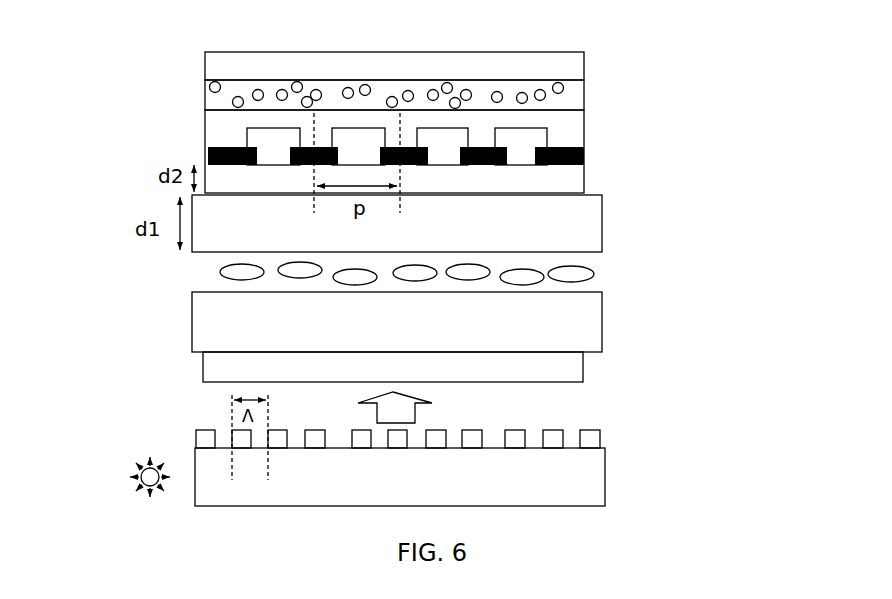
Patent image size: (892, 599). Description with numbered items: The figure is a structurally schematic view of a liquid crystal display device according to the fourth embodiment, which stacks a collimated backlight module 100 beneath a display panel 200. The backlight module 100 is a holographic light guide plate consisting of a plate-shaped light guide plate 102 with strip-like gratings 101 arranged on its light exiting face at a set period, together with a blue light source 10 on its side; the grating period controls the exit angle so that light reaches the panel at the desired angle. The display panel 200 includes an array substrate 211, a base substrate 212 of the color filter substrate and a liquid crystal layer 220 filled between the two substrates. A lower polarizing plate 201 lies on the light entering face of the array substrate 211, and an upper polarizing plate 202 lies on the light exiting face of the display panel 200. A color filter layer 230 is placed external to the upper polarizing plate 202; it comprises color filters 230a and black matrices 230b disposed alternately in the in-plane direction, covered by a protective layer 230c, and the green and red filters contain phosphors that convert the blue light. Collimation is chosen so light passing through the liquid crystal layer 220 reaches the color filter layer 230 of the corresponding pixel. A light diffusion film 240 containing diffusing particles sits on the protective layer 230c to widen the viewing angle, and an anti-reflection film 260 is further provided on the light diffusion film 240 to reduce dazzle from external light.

The blue light source 10 is at (122, 477).
The backlight module 100 is at (479, 459).
The gratings 101 is at (603, 436).
The light guide plate 102 is at (605, 484).
The display panel 200 is at (518, 206).
The lower polarizing plate 201 is at (454, 367).
The upper polarizing plate 202 is at (590, 190).
The array substrate 211 is at (605, 318).
The base substrate of color filter substrate 212 is at (602, 229).
The liquid crystal layer 220 is at (597, 277).
The color filter layer 230 is at (493, 129).
The color filters 230a is at (547, 140).
The black matrices 230b is at (584, 165).
The protective layer 230c is at (555, 122).
The light diffusion film 240 is at (588, 82).
The anti-reflection film 260 is at (590, 48).